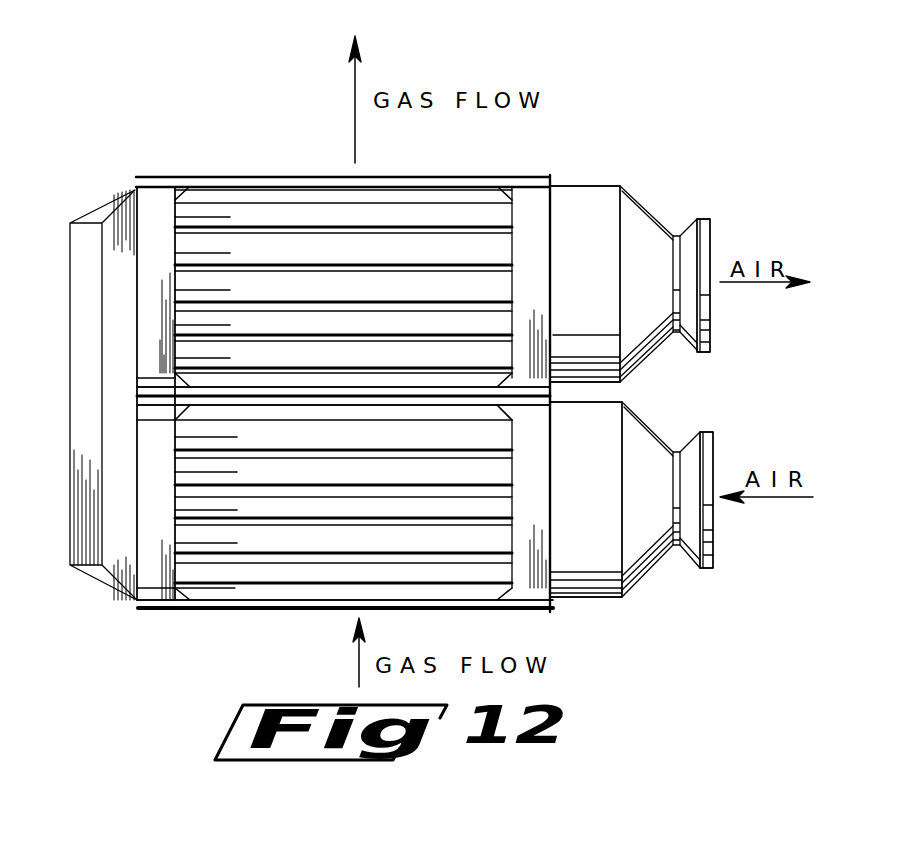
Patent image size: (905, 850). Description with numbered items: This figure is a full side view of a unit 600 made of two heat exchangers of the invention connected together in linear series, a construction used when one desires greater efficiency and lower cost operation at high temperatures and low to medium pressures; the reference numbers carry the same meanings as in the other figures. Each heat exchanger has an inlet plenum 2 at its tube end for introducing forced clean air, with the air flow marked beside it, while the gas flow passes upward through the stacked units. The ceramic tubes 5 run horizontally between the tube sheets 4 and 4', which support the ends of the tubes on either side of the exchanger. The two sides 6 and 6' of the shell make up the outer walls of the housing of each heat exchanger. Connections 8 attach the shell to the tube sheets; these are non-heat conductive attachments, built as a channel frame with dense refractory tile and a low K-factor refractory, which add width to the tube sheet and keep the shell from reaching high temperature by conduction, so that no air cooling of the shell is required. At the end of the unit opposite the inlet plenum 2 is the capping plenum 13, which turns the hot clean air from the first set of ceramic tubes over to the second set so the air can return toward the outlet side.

The unit 600 is at (561, 102).
The inlet plenum 2 is at (700, 220).
The tube sheet 4 is at (621, 382).
The tube sheet 4' is at (129, 393).
The ceramic tubes 5 is at (295, 217).
The side of the shell 6 is at (427, 358).
The side of the shell 6' is at (441, 433).
The connections 8 is at (187, 193).
The capping plenum 13 is at (70, 548).